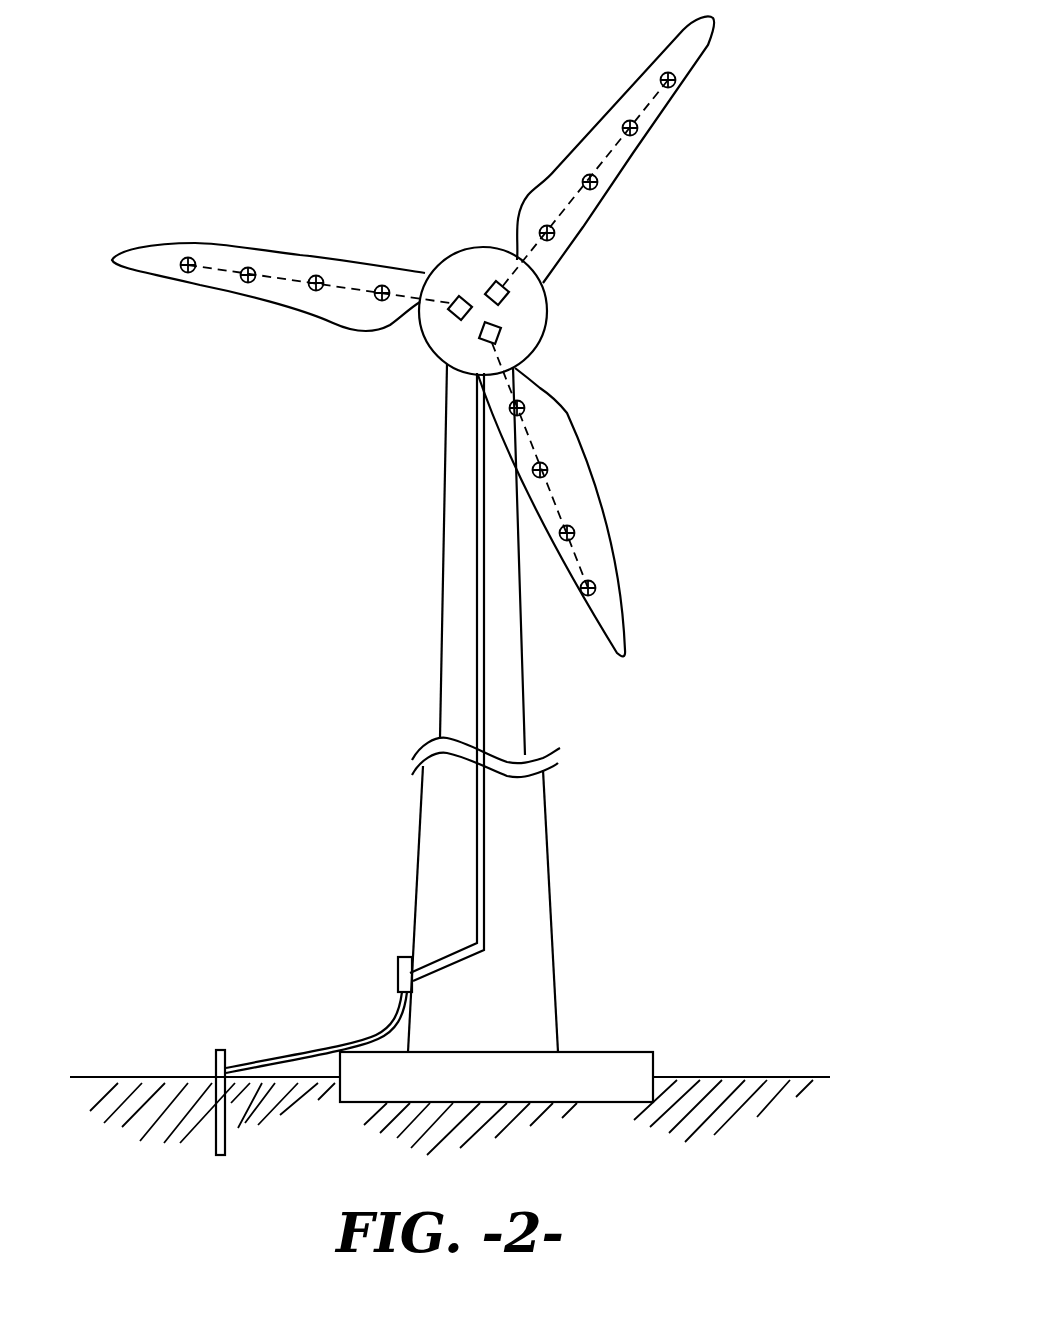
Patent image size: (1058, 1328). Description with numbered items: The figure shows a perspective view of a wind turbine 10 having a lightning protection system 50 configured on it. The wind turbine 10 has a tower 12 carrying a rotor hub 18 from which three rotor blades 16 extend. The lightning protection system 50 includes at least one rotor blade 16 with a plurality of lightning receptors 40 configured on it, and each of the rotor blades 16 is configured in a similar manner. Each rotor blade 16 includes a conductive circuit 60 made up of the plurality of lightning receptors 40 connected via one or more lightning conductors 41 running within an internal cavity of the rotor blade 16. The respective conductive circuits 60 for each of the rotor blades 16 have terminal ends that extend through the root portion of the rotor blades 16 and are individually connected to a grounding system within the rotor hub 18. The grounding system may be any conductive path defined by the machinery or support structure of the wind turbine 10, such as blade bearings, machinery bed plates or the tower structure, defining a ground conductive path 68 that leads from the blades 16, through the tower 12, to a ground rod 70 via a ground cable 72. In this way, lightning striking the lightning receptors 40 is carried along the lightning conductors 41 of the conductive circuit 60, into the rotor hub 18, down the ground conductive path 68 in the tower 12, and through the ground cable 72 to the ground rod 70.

The wind turbine 10 is at (450, 232).
The tower 12 is at (530, 880).
The rotor blade 16 is at (218, 280).
The rotor hub 18 is at (437, 333).
The lightning receptor 40 is at (318, 297).
The lightning conductor 41 is at (353, 290).
The lightning protection system 50 is at (233, 120).
The conductive circuit 60 is at (289, 271).
The ground conductive path 68 is at (477, 623).
The ground rod 70 is at (213, 1057).
The ground cable 72 is at (380, 1030).